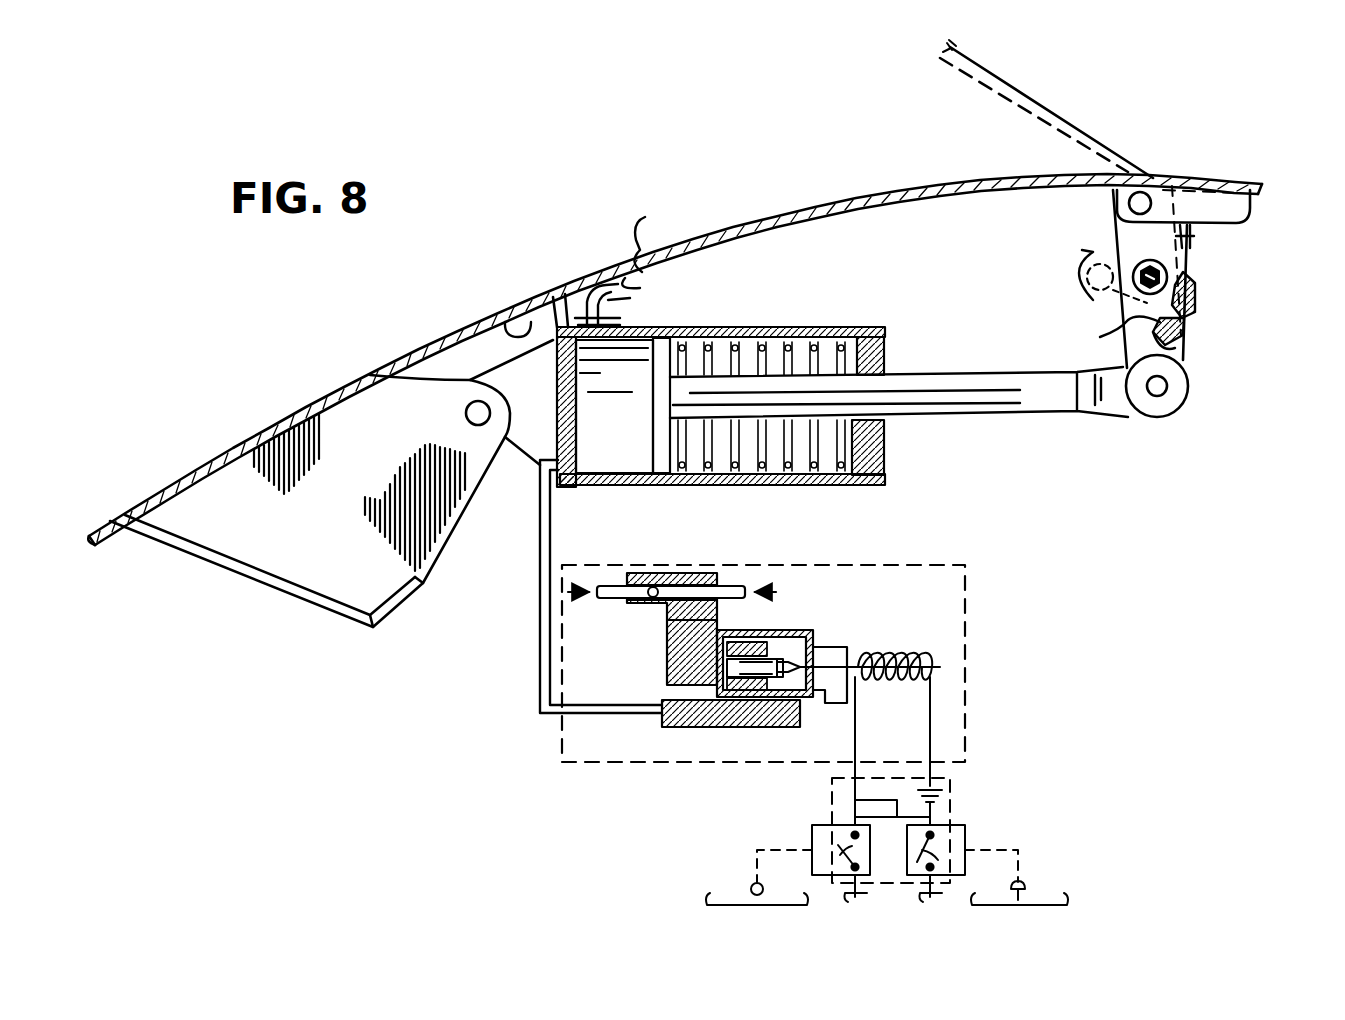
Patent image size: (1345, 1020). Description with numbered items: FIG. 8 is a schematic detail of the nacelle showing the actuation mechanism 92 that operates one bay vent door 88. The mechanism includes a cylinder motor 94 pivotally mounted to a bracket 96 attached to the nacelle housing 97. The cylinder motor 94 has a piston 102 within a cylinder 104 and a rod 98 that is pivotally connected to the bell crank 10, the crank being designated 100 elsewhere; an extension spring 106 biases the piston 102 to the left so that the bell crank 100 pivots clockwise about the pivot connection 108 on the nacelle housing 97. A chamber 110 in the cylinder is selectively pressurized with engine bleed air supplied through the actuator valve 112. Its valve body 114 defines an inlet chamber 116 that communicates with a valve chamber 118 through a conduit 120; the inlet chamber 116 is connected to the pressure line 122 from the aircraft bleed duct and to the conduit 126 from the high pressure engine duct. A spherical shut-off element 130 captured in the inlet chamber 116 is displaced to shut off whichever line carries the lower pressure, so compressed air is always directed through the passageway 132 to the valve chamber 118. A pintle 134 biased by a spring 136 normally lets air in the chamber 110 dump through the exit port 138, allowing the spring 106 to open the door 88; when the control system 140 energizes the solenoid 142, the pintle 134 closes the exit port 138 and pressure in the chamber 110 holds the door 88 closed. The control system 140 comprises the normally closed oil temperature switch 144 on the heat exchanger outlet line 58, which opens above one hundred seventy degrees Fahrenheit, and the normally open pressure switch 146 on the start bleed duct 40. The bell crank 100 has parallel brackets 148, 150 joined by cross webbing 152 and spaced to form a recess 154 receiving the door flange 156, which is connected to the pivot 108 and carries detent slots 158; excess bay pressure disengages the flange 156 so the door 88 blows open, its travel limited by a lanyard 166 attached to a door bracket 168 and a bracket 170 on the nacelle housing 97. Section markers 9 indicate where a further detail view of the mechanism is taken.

The bell crank 10 is at (356, 346).
The duct 40 is at (1050, 897).
The outlet line 58 is at (728, 897).
The door 88 is at (800, 213).
The actuation mechanism 92 is at (942, 447).
The cylinder motor 94 is at (769, 318).
The bracket 96 is at (292, 543).
The nacelle housing 97 is at (228, 436).
The rod 98 is at (975, 385).
The bell crank 100 is at (1195, 347).
The piston 102 is at (668, 333).
The cylinder 104 is at (870, 320).
The extension spring 106 is at (810, 455).
The pivot connection 108 is at (1128, 201).
The chamber 110 is at (610, 458).
The actuator valve 112 is at (883, 561).
The valve body 114 is at (815, 630).
The inlet chamber 116 is at (692, 584).
The valve chamber 118 is at (760, 690).
The conduit 120 is at (675, 650).
The pressure line 122 is at (606, 585).
The conduit 126 is at (744, 586).
The spherical shut-off element 130 is at (656, 583).
The passageway 132 is at (537, 630).
The pintle 134 is at (744, 642).
The spring 136 is at (740, 690).
The exit port 138 is at (833, 705).
The control system 140 is at (962, 802).
The solenoid 142 is at (888, 657).
The normally closed switch 144 is at (806, 836).
The normally open switch 146 is at (974, 836).
The bracket 148 is at (1192, 238).
The bracket 150 is at (1195, 338).
The cross webbing 152 is at (1193, 290).
The recess 154 is at (1100, 337).
The flange 156 is at (1082, 250).
The detent slots 158 is at (1100, 306).
The lanyard 166 is at (623, 303).
The door bracket 168 is at (657, 247).
The bracket 170 is at (468, 322).
The section line 9 is at (1037, 290).